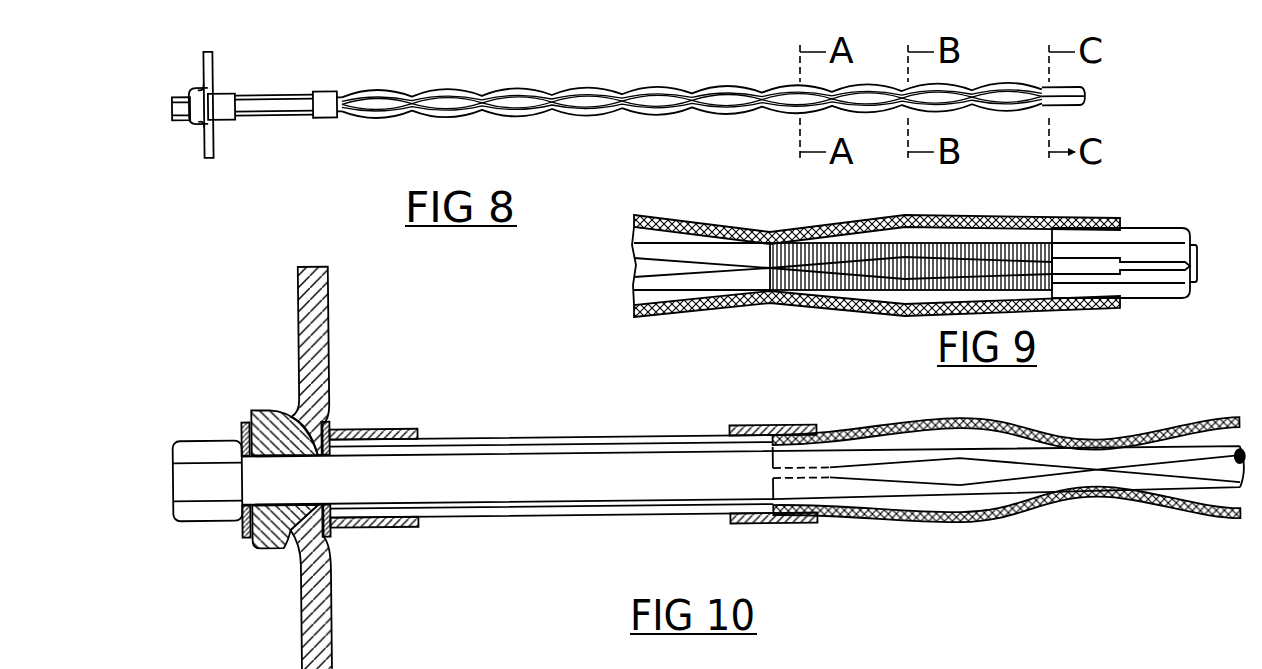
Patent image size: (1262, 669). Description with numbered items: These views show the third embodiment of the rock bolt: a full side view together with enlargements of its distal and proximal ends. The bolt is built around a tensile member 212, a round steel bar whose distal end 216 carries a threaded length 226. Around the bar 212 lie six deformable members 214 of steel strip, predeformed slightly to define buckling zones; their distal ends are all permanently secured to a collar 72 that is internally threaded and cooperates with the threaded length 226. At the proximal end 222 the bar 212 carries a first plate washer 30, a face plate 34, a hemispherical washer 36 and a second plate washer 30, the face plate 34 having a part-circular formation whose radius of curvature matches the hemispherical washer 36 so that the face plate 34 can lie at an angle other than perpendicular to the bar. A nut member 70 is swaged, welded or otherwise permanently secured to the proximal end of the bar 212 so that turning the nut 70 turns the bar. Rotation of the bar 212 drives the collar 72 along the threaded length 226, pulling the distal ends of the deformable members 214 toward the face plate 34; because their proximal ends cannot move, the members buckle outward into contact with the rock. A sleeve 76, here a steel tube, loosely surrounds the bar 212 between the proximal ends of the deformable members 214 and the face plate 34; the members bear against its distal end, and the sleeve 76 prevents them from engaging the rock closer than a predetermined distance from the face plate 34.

In FIG. 8, the tensile member 212 is at (429, 108).
In FIG. 9, the tensile member 212 is at (695, 270).
In FIG. 10, the tensile member 212 is at (518, 482).
In FIG. 8, the deformable members 214 is at (518, 100).
In FIG. 10, the deformable members 214 is at (860, 516).
In FIG. 8, the distal end 216 is at (1099, 113).
In FIG. 8, the proximal end 222 is at (245, 158).
In FIG. 9, the threaded length 226 is at (840, 292).
In FIG. 9, the collar 72 is at (1177, 293).
In FIG. 10, the nut member 70 is at (205, 443).
In FIG. 10, the plate washer 30 is at (245, 422).
In FIG. 10, the face plate 34 is at (327, 589).
In FIG. 10, the hemispherical washer 36 is at (268, 542).
In FIG. 10, the sleeve 76 is at (594, 508).